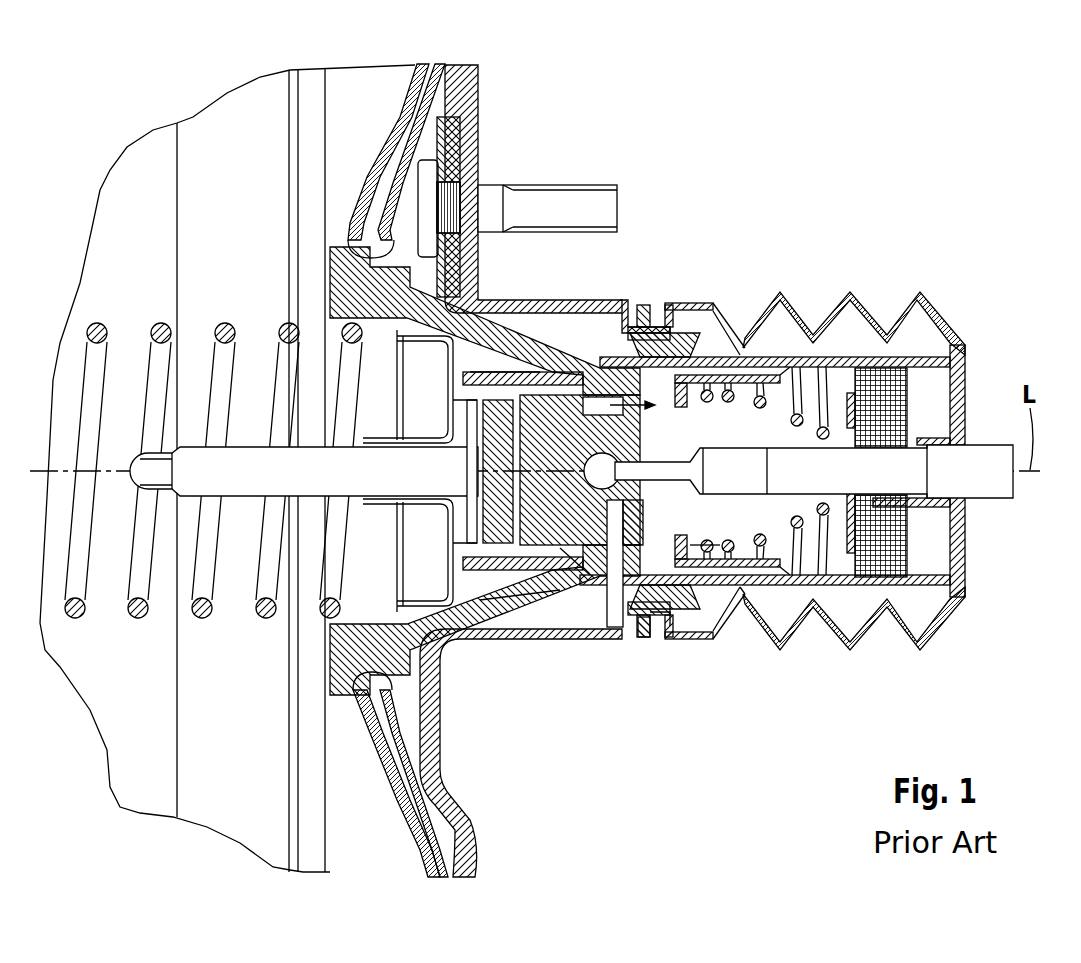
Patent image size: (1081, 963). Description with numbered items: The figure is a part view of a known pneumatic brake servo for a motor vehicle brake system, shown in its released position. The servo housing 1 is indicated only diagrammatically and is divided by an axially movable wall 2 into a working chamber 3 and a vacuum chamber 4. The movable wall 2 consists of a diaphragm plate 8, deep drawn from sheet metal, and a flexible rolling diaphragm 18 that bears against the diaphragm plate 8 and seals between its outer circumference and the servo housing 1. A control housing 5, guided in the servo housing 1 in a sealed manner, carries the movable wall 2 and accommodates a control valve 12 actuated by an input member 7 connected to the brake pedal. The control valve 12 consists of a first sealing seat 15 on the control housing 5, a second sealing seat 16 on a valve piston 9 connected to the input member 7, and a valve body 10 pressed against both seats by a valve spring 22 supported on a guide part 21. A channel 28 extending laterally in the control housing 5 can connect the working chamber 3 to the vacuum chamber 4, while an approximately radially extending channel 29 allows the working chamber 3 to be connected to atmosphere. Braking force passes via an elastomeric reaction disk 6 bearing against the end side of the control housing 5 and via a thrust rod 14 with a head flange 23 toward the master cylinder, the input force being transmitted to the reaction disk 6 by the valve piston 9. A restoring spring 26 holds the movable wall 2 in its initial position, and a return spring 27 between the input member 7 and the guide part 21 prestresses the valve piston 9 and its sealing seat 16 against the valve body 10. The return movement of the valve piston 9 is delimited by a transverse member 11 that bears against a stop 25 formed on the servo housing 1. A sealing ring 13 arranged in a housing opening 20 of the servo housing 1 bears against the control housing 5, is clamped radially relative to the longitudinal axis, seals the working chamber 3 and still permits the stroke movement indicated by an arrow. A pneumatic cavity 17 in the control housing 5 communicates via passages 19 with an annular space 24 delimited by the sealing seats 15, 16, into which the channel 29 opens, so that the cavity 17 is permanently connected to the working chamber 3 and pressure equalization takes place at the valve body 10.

The servo housing 1 is at (480, 95).
The axially movable wall 2 is at (405, 110).
The working chamber 3 is at (403, 745).
The vacuum chamber 4 is at (240, 761).
The control housing 5 is at (865, 350).
The elastomeric reaction disk 6 is at (495, 430).
The input member 7 is at (988, 492).
The diaphragm plate 8 is at (392, 152).
The valve piston 9 is at (540, 445).
The valve body 10 is at (698, 368).
The transverse member 11 is at (617, 620).
The control valve 12 is at (628, 397).
The sealing ring 13 is at (652, 318).
The thrust rod 14 is at (240, 482).
The first sealing seat 15 is at (625, 560).
The second sealing seat 16 is at (588, 588).
The pneumatic cavity 17 is at (707, 560).
The flexible rolling diaphragm 18 is at (478, 121).
The passages 19 is at (685, 372).
The housing opening 20 is at (658, 628).
The guide part 21 is at (731, 590).
The valve spring 22 is at (720, 415).
The head flange 23 is at (476, 510).
The annular space 24 is at (600, 395).
The stop 25 is at (640, 637).
The restoring spring 26 is at (137, 618).
The return spring 27 is at (795, 430).
The channel 28 is at (487, 372).
The radially extending channel 29 is at (553, 602).